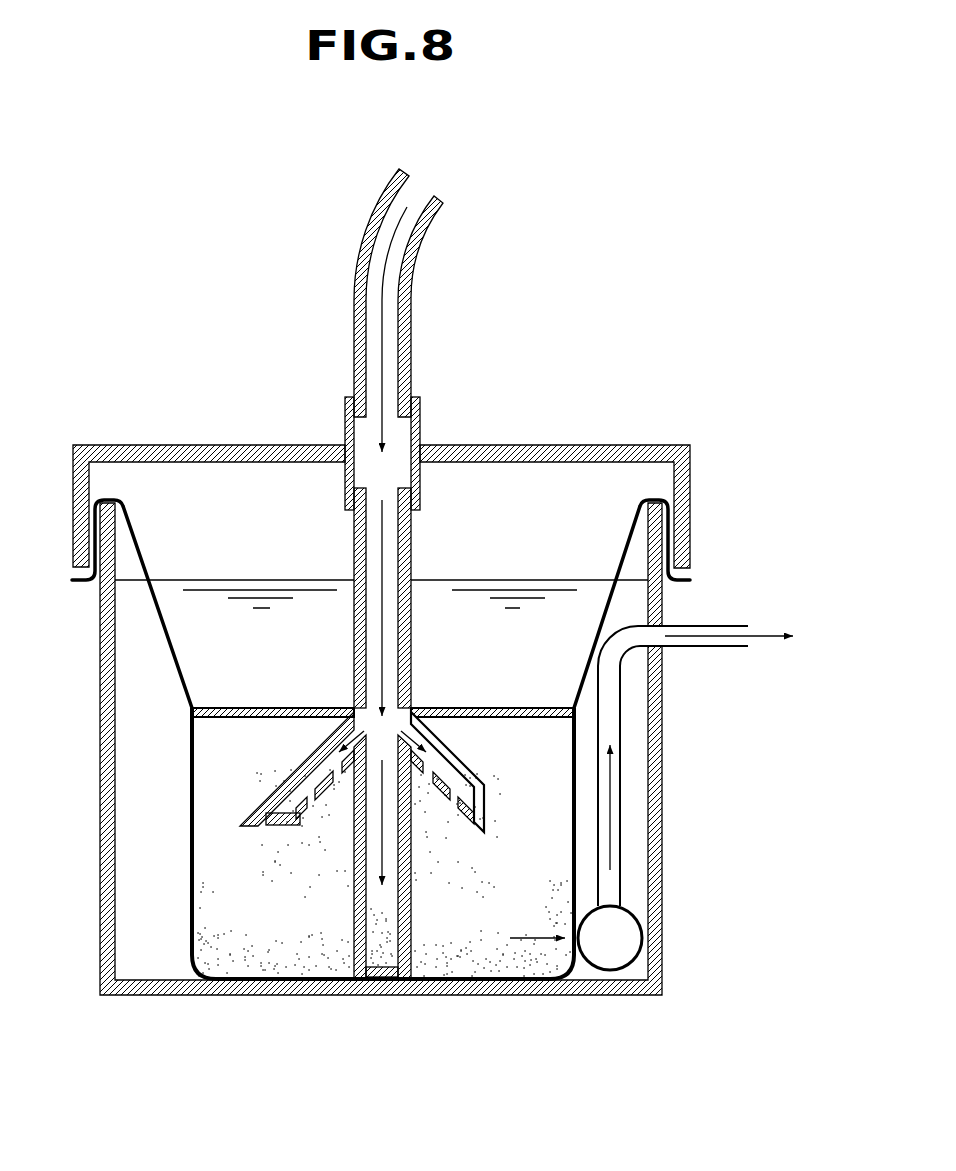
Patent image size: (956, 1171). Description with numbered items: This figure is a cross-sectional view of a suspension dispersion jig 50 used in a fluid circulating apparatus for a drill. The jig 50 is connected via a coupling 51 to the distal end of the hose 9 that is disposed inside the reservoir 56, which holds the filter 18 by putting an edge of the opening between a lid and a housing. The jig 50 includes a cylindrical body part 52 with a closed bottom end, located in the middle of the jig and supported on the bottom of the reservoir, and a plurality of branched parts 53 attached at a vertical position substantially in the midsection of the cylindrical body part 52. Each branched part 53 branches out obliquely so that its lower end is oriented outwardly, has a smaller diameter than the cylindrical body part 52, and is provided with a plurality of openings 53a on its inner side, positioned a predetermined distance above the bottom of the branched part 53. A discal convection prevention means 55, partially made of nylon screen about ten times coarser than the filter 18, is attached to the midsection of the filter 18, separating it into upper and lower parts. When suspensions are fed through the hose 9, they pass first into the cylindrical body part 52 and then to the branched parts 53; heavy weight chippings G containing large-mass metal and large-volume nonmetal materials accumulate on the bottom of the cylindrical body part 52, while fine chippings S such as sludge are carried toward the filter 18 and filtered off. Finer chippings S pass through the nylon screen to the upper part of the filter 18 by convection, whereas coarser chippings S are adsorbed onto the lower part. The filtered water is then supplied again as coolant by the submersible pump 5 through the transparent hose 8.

The hose 9 is at (360, 257).
The coupling 51 is at (345, 415).
The suspension dispersion jig 50 is at (427, 526).
The reservoir 56 is at (656, 432).
The convection prevention means 55 is at (218, 707).
The filter 18 is at (190, 835).
The cylindrical body part 52 is at (353, 942).
The branched part 53 is at (270, 830).
The opening 53a is at (305, 792).
The heavy weight chippings G is at (382, 968).
The fine chippings S is at (545, 965).
The transparent hose 8 is at (621, 718).
The submersible pump 5 is at (610, 971).